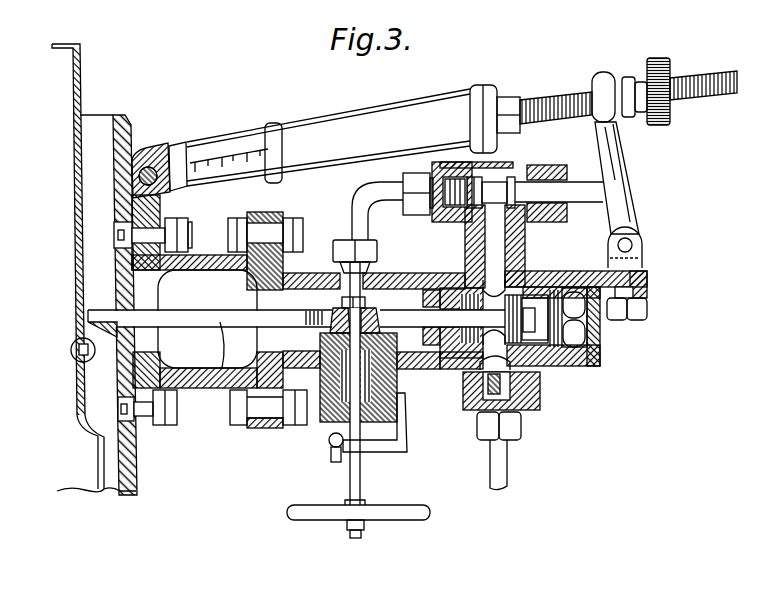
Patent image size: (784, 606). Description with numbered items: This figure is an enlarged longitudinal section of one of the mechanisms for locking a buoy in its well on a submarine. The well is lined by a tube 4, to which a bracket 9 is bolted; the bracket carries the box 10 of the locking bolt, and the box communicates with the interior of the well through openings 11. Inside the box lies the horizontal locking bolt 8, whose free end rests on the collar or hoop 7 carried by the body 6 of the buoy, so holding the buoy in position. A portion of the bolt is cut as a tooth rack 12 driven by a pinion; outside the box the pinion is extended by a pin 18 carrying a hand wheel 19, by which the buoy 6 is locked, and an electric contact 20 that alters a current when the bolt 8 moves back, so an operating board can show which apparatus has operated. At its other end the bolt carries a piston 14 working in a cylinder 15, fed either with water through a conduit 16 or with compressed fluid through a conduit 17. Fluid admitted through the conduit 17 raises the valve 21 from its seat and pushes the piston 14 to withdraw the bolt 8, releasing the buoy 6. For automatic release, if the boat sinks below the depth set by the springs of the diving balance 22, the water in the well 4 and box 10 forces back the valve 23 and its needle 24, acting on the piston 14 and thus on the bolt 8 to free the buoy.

The tube 4 is at (131, 134).
The body of the buoy 6 is at (74, 270).
The collar or hoop 7 is at (72, 340).
The locking bolt 8 is at (221, 388).
The bracket 9 is at (197, 255).
The box 10 is at (430, 369).
The opening 11 is at (257, 342).
The tooth rack 12 is at (382, 308).
The piston 14 is at (543, 272).
The cylinder 15 is at (333, 306).
The conduit 16 is at (366, 186).
The conduit 17 is at (498, 462).
The pin 18 is at (357, 473).
The hand wheel 19 is at (423, 513).
The electric contact 20 is at (400, 444).
The valve 21 is at (528, 390).
The diving balance 22 is at (332, 133).
The valve 23 is at (462, 224).
The needle 24 is at (507, 186).